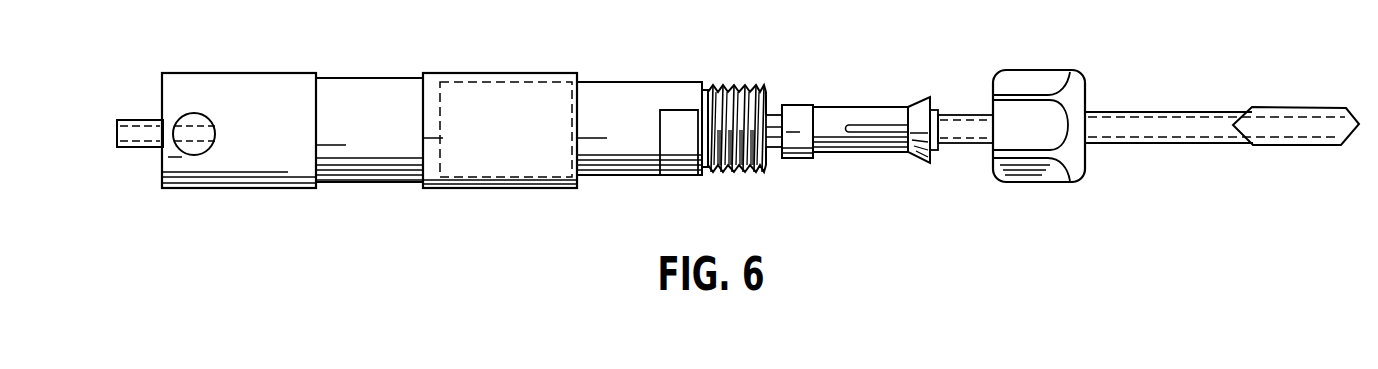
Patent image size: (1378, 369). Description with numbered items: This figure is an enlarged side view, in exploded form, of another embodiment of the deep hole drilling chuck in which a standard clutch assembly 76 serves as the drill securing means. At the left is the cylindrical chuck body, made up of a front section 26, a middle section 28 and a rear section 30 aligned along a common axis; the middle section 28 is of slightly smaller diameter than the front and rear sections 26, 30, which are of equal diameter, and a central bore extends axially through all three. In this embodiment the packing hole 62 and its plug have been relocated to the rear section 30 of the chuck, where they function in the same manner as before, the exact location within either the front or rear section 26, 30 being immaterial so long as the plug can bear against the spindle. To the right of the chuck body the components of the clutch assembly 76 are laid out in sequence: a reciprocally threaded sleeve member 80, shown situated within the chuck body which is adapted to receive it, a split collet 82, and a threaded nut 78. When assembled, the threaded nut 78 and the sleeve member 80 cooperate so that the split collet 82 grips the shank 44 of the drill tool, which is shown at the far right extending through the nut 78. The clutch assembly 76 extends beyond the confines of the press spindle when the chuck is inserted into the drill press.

The front section 26 is at (502, 73).
The middle section 28 is at (363, 145).
The rear section 30 is at (254, 147).
The shank 44 is at (1180, 143).
The packing hole 62 is at (205, 154).
The clutch assembly 76 is at (872, 78).
The threaded nut 78 is at (1025, 183).
The sleeve member 80 is at (685, 155).
The split collet 82 is at (857, 152).